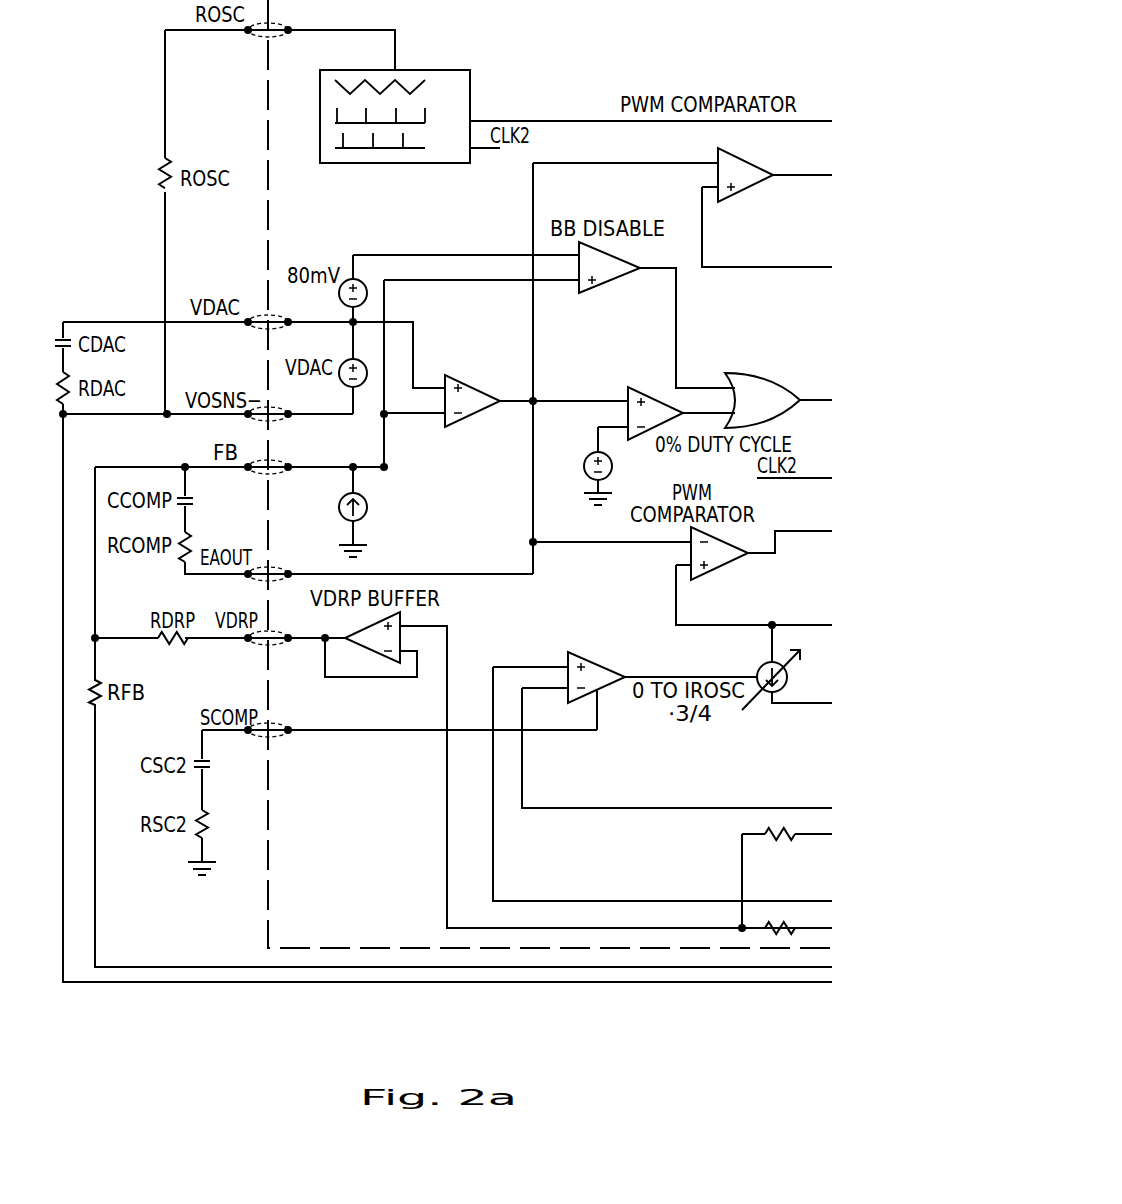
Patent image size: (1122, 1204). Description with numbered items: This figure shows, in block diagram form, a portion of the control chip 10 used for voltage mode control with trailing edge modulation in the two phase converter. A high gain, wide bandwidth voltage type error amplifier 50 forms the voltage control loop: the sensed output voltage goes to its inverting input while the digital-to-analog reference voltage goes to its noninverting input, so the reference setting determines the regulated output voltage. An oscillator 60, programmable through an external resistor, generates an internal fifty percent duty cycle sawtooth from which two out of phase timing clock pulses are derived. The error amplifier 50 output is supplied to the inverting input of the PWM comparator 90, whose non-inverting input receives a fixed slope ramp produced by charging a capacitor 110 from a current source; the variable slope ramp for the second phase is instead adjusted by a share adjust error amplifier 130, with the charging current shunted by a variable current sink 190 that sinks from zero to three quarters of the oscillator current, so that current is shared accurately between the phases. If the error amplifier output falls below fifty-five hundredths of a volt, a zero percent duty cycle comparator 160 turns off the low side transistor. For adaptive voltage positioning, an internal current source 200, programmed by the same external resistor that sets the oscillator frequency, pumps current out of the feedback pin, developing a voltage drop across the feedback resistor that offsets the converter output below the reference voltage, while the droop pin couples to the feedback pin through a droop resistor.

The control chip 10 is at (270, 912).
The error amplifier 50 is at (470, 420).
The oscillator 60 is at (460, 87).
The PWM comparator 90 is at (750, 190).
The capacitor 110 is at (800, 349).
The share adjust error amplifier 130 is at (608, 685).
The zero percent duty cycle comparator 160 is at (657, 395).
The variable current sink 190 is at (758, 668).
The internal current source 200 is at (370, 510).